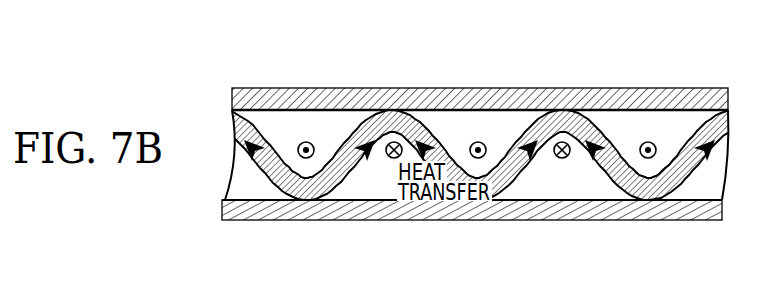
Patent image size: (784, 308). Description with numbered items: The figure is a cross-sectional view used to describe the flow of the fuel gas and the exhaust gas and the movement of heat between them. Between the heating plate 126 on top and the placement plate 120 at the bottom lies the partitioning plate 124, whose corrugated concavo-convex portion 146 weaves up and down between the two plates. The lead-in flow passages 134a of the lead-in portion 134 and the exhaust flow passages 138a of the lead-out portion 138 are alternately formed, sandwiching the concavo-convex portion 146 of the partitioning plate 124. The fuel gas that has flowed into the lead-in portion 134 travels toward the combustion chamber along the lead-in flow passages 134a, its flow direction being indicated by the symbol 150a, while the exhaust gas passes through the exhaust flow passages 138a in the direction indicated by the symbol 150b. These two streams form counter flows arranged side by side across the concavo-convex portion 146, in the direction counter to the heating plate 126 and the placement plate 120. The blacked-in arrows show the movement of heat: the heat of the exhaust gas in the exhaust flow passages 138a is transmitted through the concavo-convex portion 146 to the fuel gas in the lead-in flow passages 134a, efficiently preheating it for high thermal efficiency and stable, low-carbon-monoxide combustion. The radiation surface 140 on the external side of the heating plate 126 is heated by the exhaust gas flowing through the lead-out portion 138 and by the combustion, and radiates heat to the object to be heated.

The concavo-convex portion 146 is at (335, 160).
The partitioning plate 124 is at (477, 117).
The lead-out portion 138 is at (478, 130).
The exhaust flow passages 138a is at (425, 96).
The heating plate 126 is at (624, 90).
The radiation surface 140 is at (480, 72).
The lead-in portion 134 is at (378, 184).
The lead-in flow passages 134a is at (440, 215).
The symbol showing flow direction of the fuel gas 150a is at (563, 160).
The symbol showing flow direction of the exhaust gas 150b is at (650, 162).
The placement plate 120 is at (705, 212).